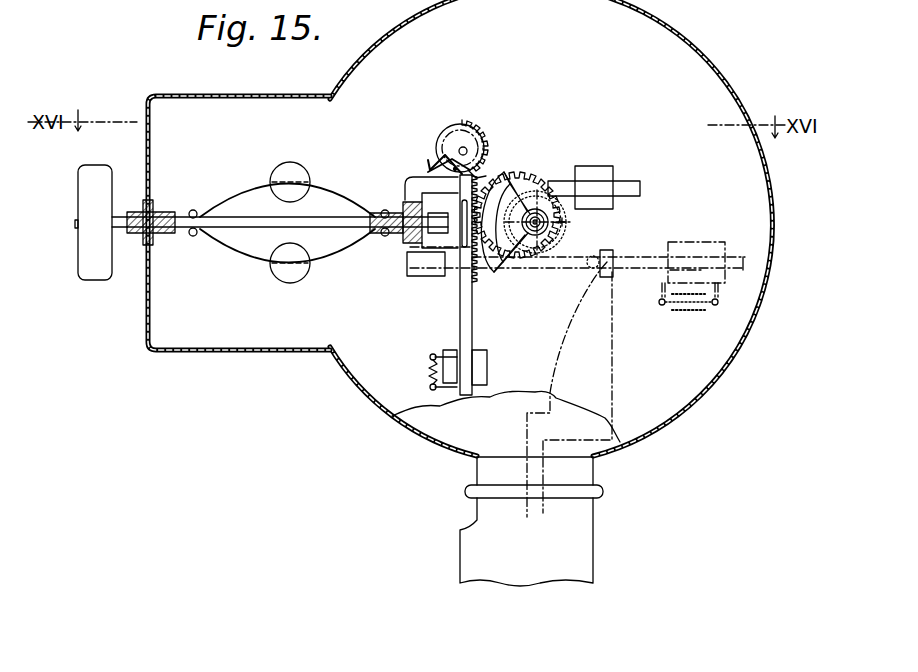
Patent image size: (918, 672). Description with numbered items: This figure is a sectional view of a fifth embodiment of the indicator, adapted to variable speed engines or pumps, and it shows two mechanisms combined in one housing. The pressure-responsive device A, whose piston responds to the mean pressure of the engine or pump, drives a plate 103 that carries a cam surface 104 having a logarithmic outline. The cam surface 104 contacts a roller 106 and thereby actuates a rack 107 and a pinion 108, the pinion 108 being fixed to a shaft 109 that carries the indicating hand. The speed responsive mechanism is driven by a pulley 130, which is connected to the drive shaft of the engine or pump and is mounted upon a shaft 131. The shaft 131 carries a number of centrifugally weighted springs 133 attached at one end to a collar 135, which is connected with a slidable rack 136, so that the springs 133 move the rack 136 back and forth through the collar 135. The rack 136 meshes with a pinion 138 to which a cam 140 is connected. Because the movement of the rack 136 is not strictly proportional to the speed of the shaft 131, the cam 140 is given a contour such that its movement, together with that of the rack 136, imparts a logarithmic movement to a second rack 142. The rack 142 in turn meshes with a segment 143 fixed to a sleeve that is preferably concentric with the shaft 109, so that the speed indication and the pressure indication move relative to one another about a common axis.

The pulley 130 is at (88, 195).
The shaft 131 is at (166, 222).
The centrifugally weighted springs 133 is at (323, 185).
The collar 135 is at (398, 203).
The slidable rack 136 is at (620, 187).
The pinion 138 is at (483, 165).
The cam 140 is at (466, 127).
The rack 142 is at (460, 308).
The segment 143 is at (492, 265).
The shaft 109 is at (538, 219).
The pinion 108 is at (566, 222).
The rack 107 is at (580, 250).
The roller 106 is at (590, 270).
The cam surface 104 is at (561, 343).
The plate 103 is at (609, 368).
The pressure-responsive device A is at (583, 540).